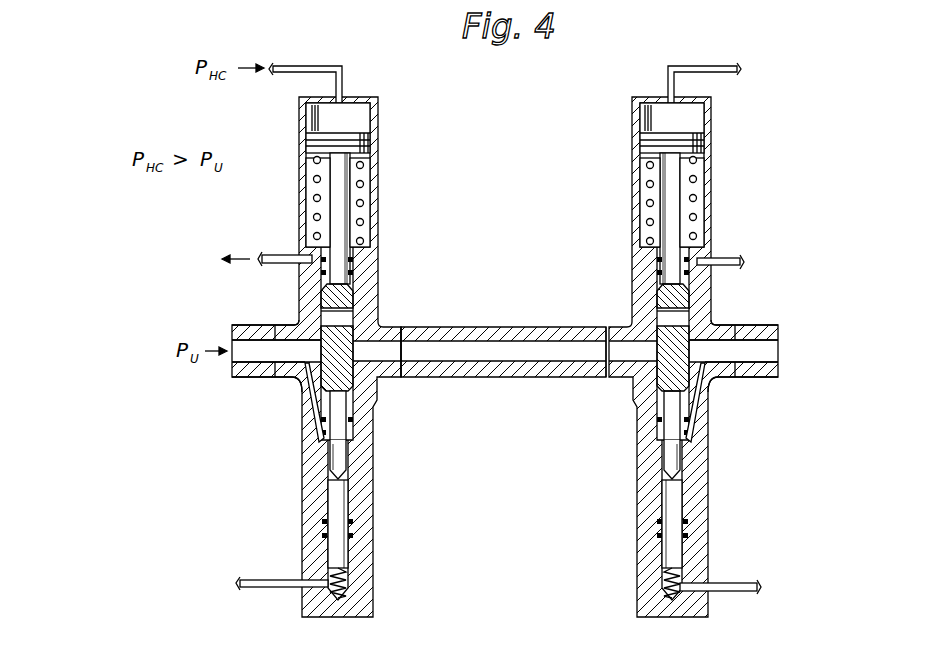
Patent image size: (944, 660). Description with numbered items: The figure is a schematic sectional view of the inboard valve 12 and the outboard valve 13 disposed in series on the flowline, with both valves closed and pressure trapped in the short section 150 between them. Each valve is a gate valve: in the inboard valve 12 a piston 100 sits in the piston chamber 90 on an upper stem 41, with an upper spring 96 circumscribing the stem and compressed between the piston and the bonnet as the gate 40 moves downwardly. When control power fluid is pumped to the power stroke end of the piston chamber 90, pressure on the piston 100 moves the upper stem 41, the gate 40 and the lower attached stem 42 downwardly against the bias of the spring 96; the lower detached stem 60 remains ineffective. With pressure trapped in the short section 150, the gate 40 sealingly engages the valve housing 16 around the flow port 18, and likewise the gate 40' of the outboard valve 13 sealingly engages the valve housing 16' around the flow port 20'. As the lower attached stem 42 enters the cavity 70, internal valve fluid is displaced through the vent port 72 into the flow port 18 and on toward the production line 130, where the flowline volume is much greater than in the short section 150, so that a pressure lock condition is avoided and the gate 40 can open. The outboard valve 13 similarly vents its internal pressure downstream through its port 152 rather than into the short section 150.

The inboard valve 12 is at (380, 108).
The outboard valve 13 is at (630, 112).
The piston 100 is at (372, 138).
The upper stem 41 is at (345, 194).
The upper spring 96 is at (362, 220).
The piston chamber 90 is at (365, 230).
The gate 40 is at (374, 334).
The valve housing 16 is at (287, 336).
The production line 130 is at (250, 325).
The flow port 18 is at (290, 352).
The vent port 72 is at (307, 435).
The lower attached stem 42 is at (340, 428).
The cavity 70 is at (338, 468).
The lower detached stem 60 is at (338, 527).
The short section 150 is at (507, 323).
The gate 40' is at (714, 333).
The valve housing 16' is at (735, 346).
The flow port 20' is at (759, 351).
The port 152 is at (695, 433).